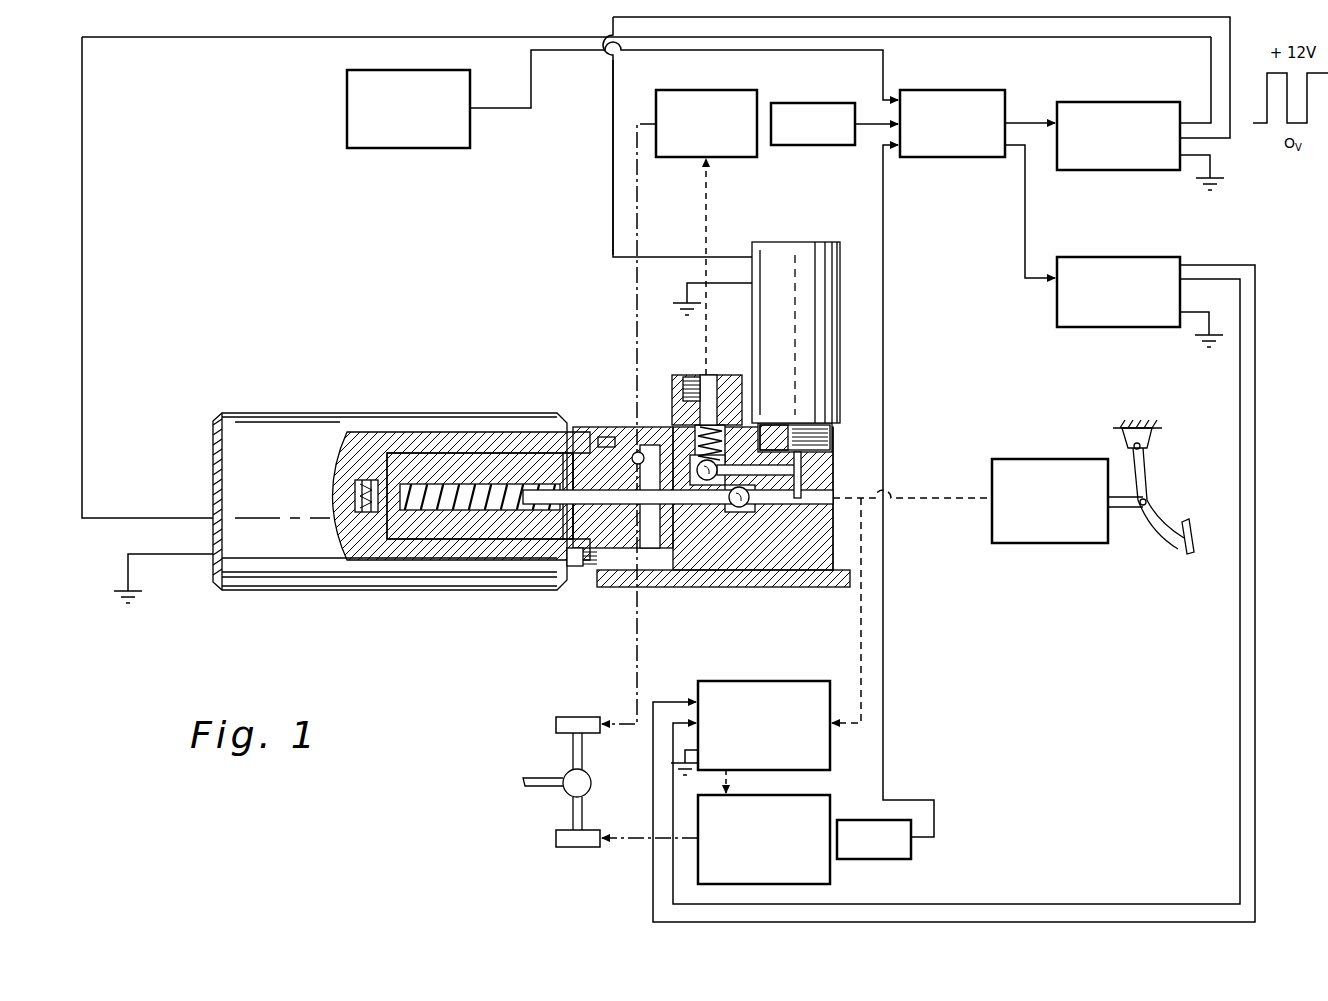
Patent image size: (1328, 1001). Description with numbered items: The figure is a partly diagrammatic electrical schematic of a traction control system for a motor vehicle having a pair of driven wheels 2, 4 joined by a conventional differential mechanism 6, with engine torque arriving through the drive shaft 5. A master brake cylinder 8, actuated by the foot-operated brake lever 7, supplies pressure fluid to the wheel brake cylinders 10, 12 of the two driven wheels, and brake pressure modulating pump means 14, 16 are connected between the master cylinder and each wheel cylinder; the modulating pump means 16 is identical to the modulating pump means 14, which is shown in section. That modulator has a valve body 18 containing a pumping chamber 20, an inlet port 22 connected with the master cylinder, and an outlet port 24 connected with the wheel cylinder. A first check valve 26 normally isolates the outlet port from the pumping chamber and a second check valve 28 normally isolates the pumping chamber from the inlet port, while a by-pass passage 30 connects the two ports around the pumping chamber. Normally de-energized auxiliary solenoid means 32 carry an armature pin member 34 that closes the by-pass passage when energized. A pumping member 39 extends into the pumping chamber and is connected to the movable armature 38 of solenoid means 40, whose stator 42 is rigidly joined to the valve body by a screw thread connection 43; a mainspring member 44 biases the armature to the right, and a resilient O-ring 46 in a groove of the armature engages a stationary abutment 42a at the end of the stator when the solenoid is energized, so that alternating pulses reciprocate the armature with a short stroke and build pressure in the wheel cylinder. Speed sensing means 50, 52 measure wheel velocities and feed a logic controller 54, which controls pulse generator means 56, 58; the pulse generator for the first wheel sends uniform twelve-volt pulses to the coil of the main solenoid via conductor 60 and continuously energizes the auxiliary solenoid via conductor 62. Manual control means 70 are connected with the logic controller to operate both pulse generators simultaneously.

The driven wheel 2 is at (577, 717).
The driven wheel 4 is at (577, 847).
The drive shaft 5 is at (523, 780).
The differential mechanism 6 is at (590, 780).
The foot-operated brake lever 7 is at (1191, 549).
The master brake cylinder 8 is at (1055, 543).
The wheel brake cylinder 10 is at (708, 90).
The wheel brake cylinder 12 is at (830, 880).
The brake pressure modulating pump means 14 is at (580, 368).
The brake pressure modulating pump means 16 is at (766, 681).
The valve body 18 is at (833, 470).
The pumping chamber 20 is at (716, 520).
The inlet port 22 is at (815, 510).
The outlet port 24 is at (680, 386).
The first check valve 26 is at (748, 480).
The second check valve 28 is at (740, 510).
The by-pass passage 30 is at (801, 490).
The auxiliary solenoid means 32 is at (795, 242).
The armature pin member 34 is at (788, 425).
The movable armature 38 is at (437, 548).
The pumping member 39 is at (612, 505).
The solenoid means 40 is at (312, 404).
The stator 42 is at (480, 432).
The stationary abutment 42a is at (612, 438).
The screw thread connection 43 is at (577, 566).
The mainspring member 44 is at (355, 495).
The resilient O-ring 46 is at (640, 453).
The speed sensing means 50 is at (812, 145).
The speed sensing means 52 is at (911, 850).
The logic controller 54 is at (957, 157).
The pulse generator means 56 is at (1110, 170).
The pulse generator means 58 is at (1110, 327).
The conductor 60 is at (84, 136).
The conductor 62 is at (613, 176).
The manual control means 70 is at (347, 111).